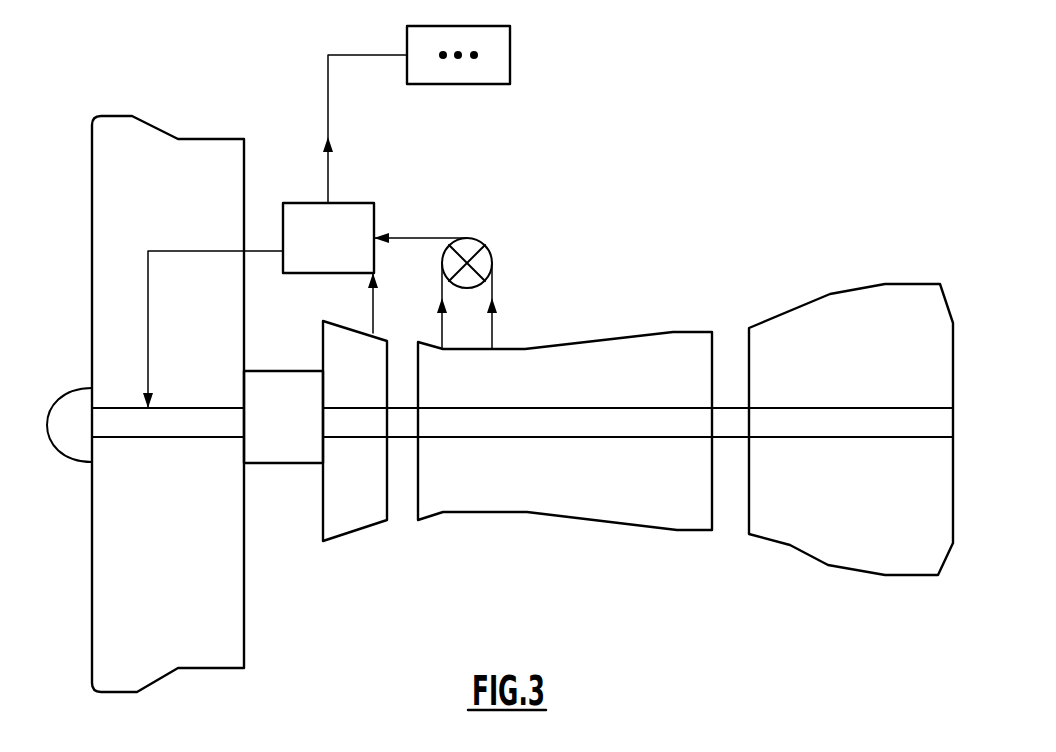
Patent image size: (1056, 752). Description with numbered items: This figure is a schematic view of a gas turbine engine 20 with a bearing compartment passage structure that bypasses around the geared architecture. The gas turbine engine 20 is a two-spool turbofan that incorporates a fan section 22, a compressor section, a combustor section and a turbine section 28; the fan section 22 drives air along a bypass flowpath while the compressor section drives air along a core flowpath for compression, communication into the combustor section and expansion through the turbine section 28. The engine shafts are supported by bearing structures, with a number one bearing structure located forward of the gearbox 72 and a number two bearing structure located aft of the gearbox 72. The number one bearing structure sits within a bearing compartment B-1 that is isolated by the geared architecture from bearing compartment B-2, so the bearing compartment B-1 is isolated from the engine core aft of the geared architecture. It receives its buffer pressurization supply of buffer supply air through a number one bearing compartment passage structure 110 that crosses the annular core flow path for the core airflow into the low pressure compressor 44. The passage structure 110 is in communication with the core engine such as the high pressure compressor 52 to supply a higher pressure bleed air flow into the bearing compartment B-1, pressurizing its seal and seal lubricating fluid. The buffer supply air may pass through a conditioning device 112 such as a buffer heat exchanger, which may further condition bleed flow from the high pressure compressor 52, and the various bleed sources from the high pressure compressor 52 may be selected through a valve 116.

The gas turbine engine 20 is at (950, 212).
The fan section 22 is at (181, 583).
The turbine section 28 is at (870, 362).
The low pressure compressor 44 is at (373, 497).
The high pressure compressor 52 is at (590, 497).
The gearbox 72 is at (301, 429).
The #1 bearing compartment passage structure 110 is at (538, 197).
The conditioning device 112 is at (338, 222).
The valve 116 is at (493, 255).
The #1 bearing compartment B-1 is at (192, 426).
The #2 bearing compartment B-2 is at (363, 424).